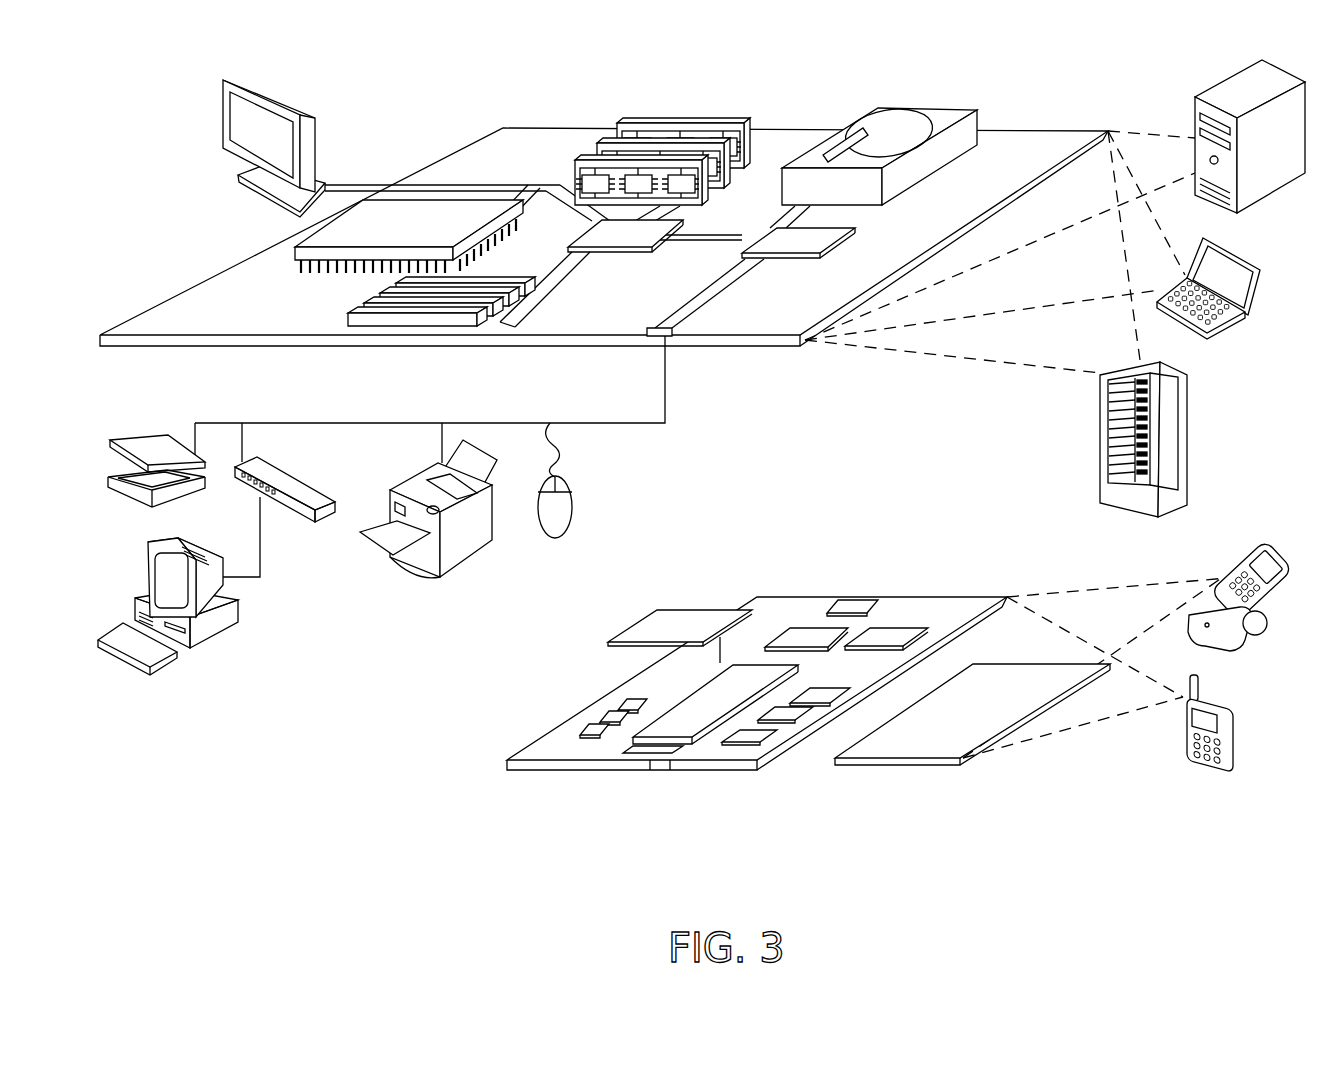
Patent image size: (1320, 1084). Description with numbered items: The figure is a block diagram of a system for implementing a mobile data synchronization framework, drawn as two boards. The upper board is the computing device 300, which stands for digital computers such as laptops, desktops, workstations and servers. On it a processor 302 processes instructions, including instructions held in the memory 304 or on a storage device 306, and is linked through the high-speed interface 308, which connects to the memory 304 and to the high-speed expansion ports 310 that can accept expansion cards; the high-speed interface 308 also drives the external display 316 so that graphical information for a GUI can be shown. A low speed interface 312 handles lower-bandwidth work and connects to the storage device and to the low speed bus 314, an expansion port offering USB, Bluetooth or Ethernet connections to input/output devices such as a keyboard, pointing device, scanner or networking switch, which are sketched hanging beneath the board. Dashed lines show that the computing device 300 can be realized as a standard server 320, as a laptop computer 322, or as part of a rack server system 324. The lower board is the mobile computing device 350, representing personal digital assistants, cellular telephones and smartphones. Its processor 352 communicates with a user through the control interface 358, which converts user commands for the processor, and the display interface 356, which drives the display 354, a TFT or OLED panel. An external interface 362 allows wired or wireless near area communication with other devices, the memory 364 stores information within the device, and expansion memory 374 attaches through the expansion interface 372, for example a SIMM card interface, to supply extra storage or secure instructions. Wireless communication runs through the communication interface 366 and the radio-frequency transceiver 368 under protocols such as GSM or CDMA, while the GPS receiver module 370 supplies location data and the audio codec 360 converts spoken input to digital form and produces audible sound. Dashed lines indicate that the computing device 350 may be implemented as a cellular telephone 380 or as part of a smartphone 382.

The computing device 300 is at (424, 100).
The processor 302 is at (303, 250).
The memory 304 is at (680, 125).
The hard disk drive 306 is at (876, 116).
The high-speed interface 308 is at (597, 235).
The high-speed expansion ports 310 is at (373, 306).
The low speed interface 312 is at (780, 233).
The low speed bus 314 is at (675, 338).
The display 316 is at (235, 75).
The standard server 320 is at (1195, 114).
The laptop computer 322 is at (1213, 339).
The rack server system 324 is at (1098, 465).
The computing device 350 is at (488, 772).
The processor 352 is at (687, 727).
The display 354 is at (927, 747).
The display interface 356 is at (755, 738).
The control interface 358 is at (787, 711).
The audio codec 360 is at (812, 690).
The external interface 362 is at (650, 770).
The memory 364 is at (600, 720).
The communication interface 366 is at (800, 630).
The transceiver 368 is at (883, 633).
The GPS receiver module 370 is at (855, 595).
The expansion interface 372 is at (733, 608).
The expansion memory 374 is at (648, 612).
The cellular telephone 380 is at (1242, 552).
The smartphone 382 is at (1187, 717).